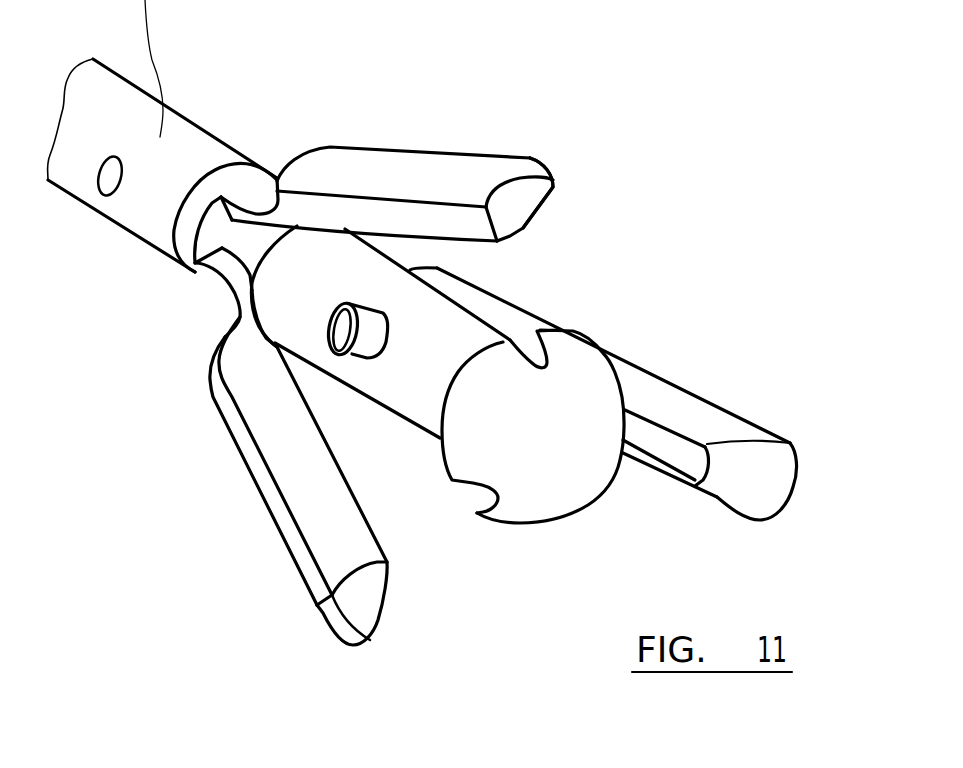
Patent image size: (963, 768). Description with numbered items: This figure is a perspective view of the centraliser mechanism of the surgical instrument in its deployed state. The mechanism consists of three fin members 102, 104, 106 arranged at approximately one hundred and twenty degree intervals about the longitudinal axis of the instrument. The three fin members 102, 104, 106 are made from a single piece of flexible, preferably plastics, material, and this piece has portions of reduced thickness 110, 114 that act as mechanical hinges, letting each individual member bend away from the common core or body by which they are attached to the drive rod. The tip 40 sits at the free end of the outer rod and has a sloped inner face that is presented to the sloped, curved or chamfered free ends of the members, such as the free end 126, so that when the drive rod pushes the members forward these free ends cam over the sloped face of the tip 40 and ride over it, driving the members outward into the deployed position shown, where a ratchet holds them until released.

The tip 40 is at (563, 427).
The fin member 102 is at (412, 175).
The fin member 104 is at (268, 487).
The fin member 106 is at (693, 417).
The portion of reduced thickness 110 is at (254, 187).
The portion of reduced thickness 114 is at (203, 307).
The sloped free end 126 is at (523, 172).